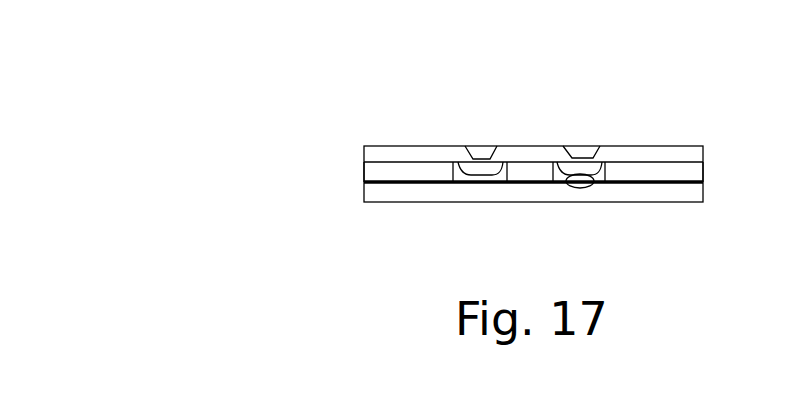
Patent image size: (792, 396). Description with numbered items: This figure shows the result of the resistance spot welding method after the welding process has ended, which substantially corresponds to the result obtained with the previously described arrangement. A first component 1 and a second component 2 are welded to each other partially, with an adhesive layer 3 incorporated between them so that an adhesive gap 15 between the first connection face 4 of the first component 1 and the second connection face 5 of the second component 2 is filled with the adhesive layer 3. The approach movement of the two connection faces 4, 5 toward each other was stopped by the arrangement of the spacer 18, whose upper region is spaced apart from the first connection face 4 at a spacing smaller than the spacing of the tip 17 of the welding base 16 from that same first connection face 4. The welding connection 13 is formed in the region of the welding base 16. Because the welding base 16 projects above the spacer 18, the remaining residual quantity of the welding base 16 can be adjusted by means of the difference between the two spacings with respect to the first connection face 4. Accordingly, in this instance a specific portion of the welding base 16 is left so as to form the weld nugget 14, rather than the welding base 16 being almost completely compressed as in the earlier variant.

The first component 1 is at (380, 146).
The second component 2 is at (426, 190).
The adhesive layer 3 is at (387, 170).
The first connection face 4 is at (628, 176).
The second connection face 5 is at (671, 160).
The welding connection 13 is at (490, 99).
The weld nugget 14 is at (582, 186).
The adhesive gap 15 is at (350, 174).
The welding base 16 is at (603, 146).
The tip of the welding base 17 is at (482, 184).
The spacer 18 is at (477, 137).